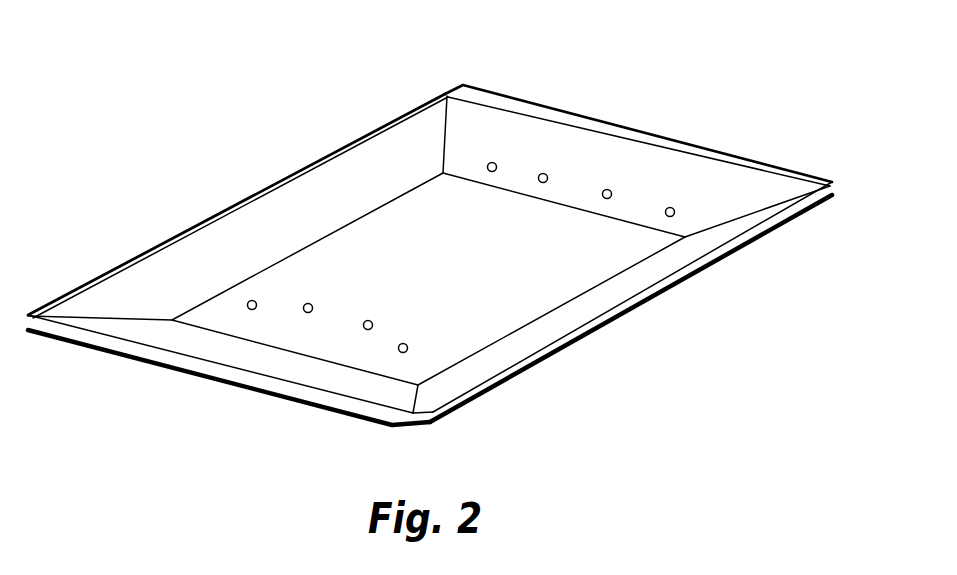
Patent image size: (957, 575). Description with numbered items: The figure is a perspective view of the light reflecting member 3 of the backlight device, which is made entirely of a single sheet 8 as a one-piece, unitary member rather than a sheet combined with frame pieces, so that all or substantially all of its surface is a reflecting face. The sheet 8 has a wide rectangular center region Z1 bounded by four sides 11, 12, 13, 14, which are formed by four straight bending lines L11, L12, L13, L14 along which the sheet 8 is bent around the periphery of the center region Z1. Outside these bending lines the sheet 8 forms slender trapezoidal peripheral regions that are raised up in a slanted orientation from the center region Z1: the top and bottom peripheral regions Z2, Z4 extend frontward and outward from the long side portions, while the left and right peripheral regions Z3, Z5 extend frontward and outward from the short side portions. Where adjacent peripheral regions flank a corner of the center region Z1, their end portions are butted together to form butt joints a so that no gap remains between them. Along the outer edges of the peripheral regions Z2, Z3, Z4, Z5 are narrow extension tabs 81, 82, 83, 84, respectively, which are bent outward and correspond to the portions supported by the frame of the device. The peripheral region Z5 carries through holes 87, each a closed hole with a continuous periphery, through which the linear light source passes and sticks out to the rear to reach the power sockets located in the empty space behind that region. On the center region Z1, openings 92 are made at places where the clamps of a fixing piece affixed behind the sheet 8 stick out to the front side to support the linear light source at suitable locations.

The sheet 8 is at (430, 241).
The light reflecting member 3 is at (430, 241).
The extension tab 81 is at (207, 218).
The extension tab 82 is at (207, 370).
The extension tab 83 is at (543, 352).
The extension tab 84 is at (667, 142).
The through holes 87 is at (545, 173).
The openings 92 is at (254, 309).
The side 11 is at (308, 247).
The side 12 is at (350, 367).
The side 13 is at (493, 342).
The side 14 is at (538, 202).
The bending line L11 is at (314, 246).
The bending line L12 is at (296, 341).
The bending line L13 is at (551, 311).
The bending line L14 is at (564, 215).
The center region Z1 is at (472, 192).
The peripheral region Z2 is at (283, 207).
The peripheral region Z3 is at (297, 372).
The peripheral region Z4 is at (598, 295).
The peripheral region Z5 is at (720, 160).
The butt joint a is at (108, 318).